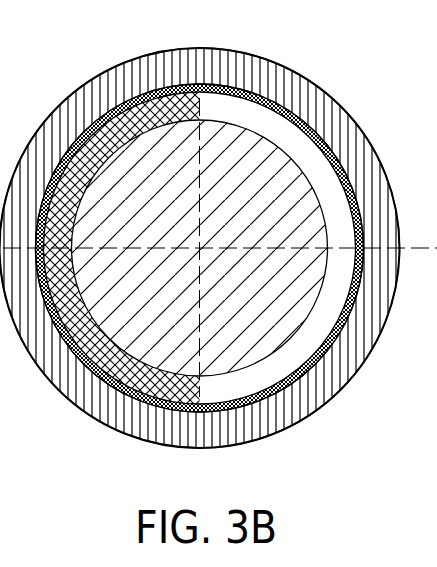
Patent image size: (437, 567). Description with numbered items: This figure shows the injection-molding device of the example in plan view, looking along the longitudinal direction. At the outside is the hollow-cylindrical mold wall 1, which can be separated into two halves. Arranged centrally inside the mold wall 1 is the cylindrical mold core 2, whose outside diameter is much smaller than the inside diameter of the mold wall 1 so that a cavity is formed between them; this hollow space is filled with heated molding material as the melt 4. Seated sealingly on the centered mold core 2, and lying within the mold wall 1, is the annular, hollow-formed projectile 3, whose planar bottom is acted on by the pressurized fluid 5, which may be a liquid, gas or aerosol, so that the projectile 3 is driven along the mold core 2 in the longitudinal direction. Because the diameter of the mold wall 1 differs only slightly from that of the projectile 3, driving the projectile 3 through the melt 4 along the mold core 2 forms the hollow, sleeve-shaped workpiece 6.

The mold wall 1 is at (302, 409).
The mold core 2 is at (300, 227).
The projectile 3 is at (263, 115).
The melt 4 is at (200, 248).
The pressurized fluid 5 is at (130, 97).
The hollow-formed workpiece 6 is at (100, 388).